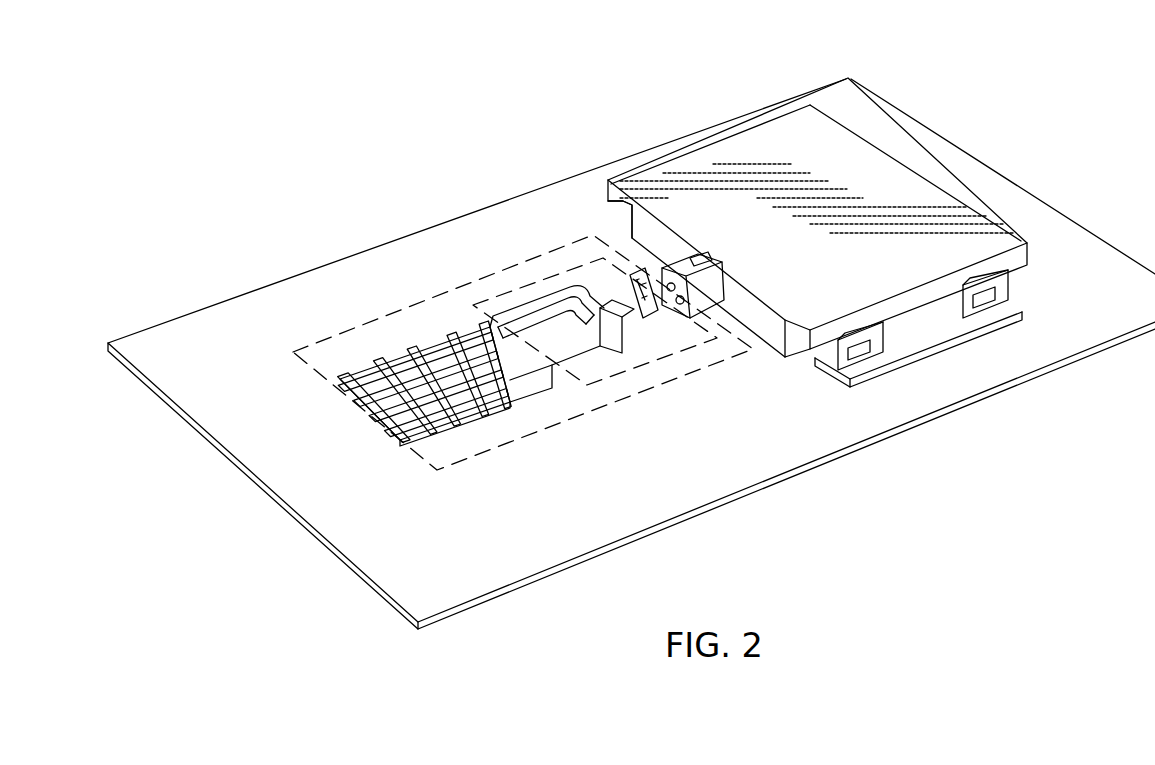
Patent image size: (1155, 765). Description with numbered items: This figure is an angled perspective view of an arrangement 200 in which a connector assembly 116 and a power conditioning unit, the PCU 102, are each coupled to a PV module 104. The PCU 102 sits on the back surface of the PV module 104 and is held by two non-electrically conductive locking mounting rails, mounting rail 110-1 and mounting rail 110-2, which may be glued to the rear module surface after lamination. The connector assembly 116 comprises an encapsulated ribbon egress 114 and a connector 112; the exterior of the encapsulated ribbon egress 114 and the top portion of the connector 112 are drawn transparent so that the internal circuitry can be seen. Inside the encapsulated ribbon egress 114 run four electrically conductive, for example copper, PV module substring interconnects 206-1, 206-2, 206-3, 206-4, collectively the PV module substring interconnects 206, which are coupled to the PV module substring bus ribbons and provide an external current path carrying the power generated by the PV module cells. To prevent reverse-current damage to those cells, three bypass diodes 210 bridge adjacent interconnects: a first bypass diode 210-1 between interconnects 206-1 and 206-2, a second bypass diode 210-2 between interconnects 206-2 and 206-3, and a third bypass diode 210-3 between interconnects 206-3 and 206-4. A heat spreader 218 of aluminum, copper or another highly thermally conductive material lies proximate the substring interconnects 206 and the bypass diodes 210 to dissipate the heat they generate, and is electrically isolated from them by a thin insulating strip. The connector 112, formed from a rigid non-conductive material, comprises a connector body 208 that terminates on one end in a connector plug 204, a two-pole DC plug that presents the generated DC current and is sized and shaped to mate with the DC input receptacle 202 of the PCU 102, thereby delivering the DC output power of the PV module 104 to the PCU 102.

The system 200 is at (1054, 78).
The PCU 102 is at (727, 158).
The PV module 104 is at (186, 336).
The mounting rail 110-1 is at (938, 348).
The mounting rail 110-2 is at (628, 207).
The connector 112 is at (618, 392).
The encapsulated ribbon egress 114 is at (374, 459).
The connector assembly 116 is at (441, 296).
The DC input receptacle 202 is at (706, 294).
The connector plug 204 is at (682, 312).
The PV module substring interconnects 206 is at (354, 408).
The PV module substring interconnect 206-1 is at (392, 436).
The PV module substring interconnect 206-2 is at (376, 420).
The PV module substring interconnect 206-3 is at (360, 405).
The PV module substring interconnect 206-4 is at (348, 392).
The connector body 208 is at (578, 365).
The bypass diodes 210 is at (439, 459).
The first bypass diode 210-1 is at (492, 410).
The second bypass diode 210-2 is at (452, 425).
The third bypass diode 210-3 is at (420, 412).
The heat spreader 218 is at (462, 330).